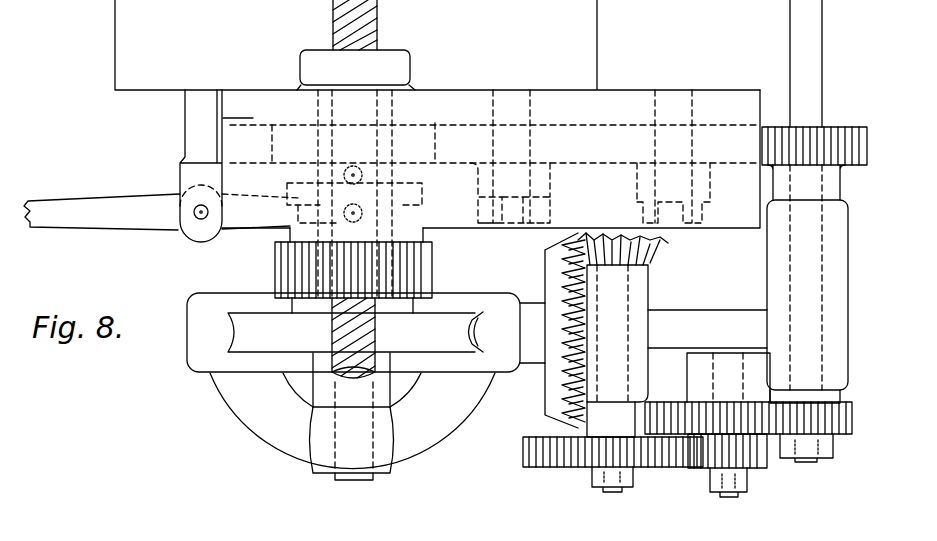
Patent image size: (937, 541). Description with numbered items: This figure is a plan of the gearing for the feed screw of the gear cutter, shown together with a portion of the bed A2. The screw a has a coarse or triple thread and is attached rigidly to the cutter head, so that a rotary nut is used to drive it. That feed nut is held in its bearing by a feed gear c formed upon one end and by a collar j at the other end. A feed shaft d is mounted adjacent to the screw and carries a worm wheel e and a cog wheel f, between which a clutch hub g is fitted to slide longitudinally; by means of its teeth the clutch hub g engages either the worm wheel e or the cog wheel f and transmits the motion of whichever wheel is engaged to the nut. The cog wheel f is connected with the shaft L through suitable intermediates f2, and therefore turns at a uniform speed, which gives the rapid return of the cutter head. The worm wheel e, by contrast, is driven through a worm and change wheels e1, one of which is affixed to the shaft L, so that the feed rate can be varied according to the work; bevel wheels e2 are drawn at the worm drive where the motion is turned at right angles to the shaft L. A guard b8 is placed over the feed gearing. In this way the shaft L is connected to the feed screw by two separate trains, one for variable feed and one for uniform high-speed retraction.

The bed A2 is at (115, 40).
The screw a is at (380, 32).
The collar j is at (300, 68).
The cog wheel f is at (271, 146).
The clutch hub g is at (424, 193).
The intermediates f2 is at (610, 156).
The guard b8 is at (741, 229).
The shaft L is at (824, 62).
The feed gear c is at (434, 262).
The worm wheel e is at (227, 327).
The bevel gear e2 is at (680, 258).
The feed shaft d is at (352, 481).
The change wheels e1 is at (613, 464).